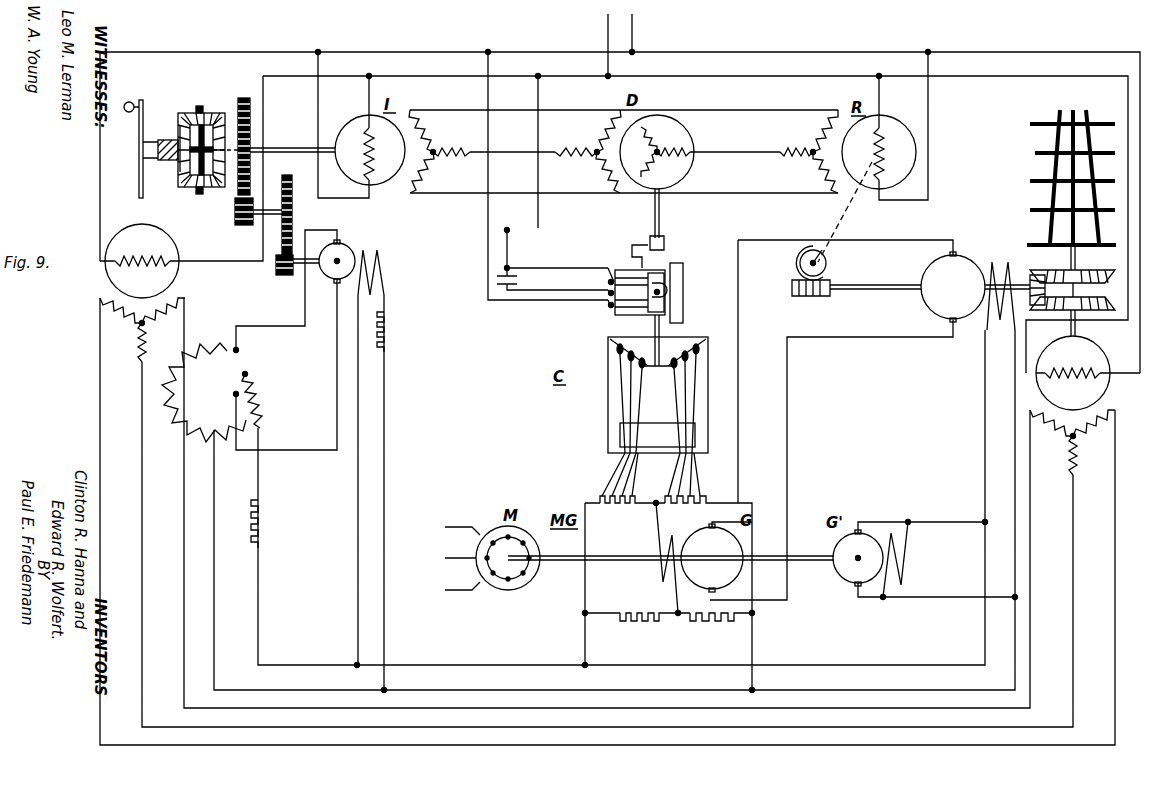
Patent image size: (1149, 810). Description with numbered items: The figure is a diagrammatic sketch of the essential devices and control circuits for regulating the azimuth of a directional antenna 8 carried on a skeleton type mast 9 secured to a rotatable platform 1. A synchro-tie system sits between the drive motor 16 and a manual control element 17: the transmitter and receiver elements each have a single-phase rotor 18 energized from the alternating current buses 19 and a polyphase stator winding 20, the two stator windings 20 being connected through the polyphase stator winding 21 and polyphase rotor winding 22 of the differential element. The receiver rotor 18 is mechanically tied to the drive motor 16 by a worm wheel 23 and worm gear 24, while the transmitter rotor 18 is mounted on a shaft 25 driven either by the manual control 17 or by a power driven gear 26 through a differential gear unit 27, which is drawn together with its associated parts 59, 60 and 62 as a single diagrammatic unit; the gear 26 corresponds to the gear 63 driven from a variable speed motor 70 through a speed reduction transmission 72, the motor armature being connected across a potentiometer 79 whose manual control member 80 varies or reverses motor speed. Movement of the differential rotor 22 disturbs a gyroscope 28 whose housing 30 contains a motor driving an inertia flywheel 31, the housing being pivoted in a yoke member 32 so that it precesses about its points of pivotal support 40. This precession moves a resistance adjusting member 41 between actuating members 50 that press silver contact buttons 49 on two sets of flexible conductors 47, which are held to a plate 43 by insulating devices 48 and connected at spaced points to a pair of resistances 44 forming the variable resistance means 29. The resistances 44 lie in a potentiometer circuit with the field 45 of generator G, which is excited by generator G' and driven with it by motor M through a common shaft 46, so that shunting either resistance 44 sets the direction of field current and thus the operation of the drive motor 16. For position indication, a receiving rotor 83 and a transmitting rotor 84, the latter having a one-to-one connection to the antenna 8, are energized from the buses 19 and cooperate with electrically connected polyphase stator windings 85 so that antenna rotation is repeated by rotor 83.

The platform 1 is at (1092, 250).
The directional antenna 8 is at (1032, 153).
The skeleton type mast 9 is at (1052, 198).
The drive motor 16 is at (972, 266).
The manual control element 17 is at (139, 150).
The single-phase rotor 18 is at (916, 148).
The buses 19 is at (630, 36).
The polyphase stator winding 20 is at (818, 132).
The polyphase stator winding 21 is at (592, 128).
The polyphase rotor winding 22 is at (676, 108).
The worm wheel 23 is at (830, 263).
The worm gear 24 is at (830, 296).
The shaft 25 is at (292, 139).
The power driven gear 26 is at (246, 99).
The differential gear unit 27 is at (190, 113).
The gyroscope 28 is at (615, 315).
The variable resistance means 29 is at (700, 360).
The housing or inner frame 30 is at (610, 275).
The inertia flywheel 31 is at (683, 278).
The yoke member or outer frame 32 is at (664, 283).
The points of pivotal support 40 is at (666, 298).
The resistance adjusting member 41 is at (670, 323).
The plate 43 is at (608, 385).
The resistances 44 is at (690, 504).
The field 45 is at (660, 575).
The common shaft 46 is at (565, 562).
The flexible conductors 47 is at (690, 410).
The insulating devices 48 is at (695, 440).
The silver contact buttons 49 is at (687, 358).
The actuating members 50 is at (657, 368).
The differential bearings 59 is at (205, 112).
The clutch block 60 is at (164, 139).
The differential side gear 62 is at (180, 174).
The gear 63 is at (232, 205).
The variable speed motor 70 is at (348, 246).
The speed reduction transmission 72 is at (292, 228).
The potentiometer 79 is at (262, 426).
The manual potentiometer control member 80 is at (236, 394).
The rotor of the receiving element 83 is at (106, 276).
The rotor of the transmitting element 84 is at (1105, 395).
The polyphase stator windings 85 is at (1080, 446).